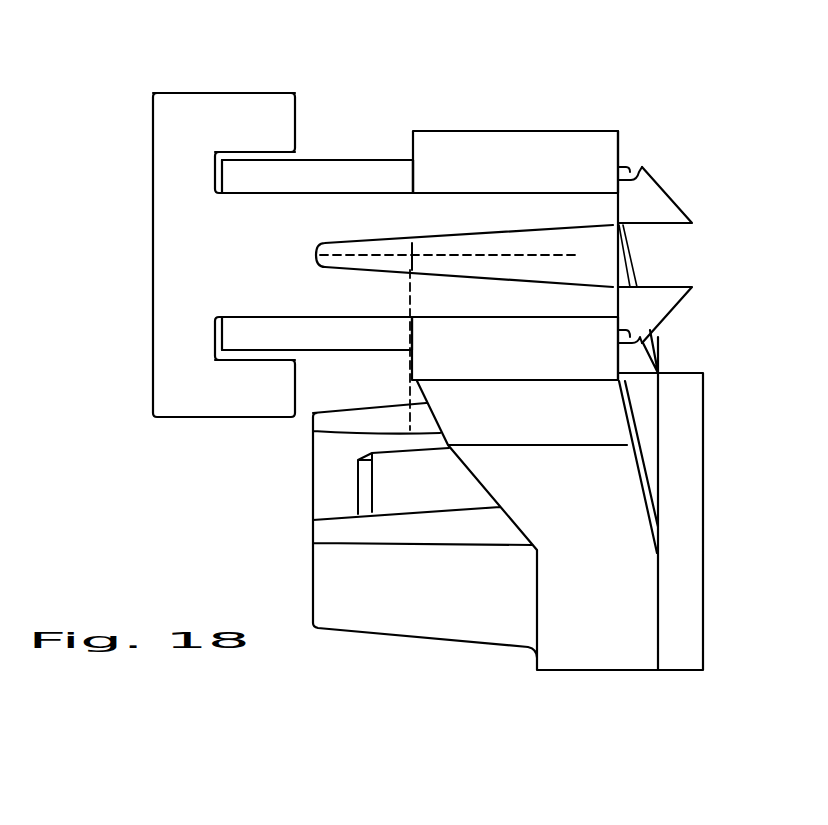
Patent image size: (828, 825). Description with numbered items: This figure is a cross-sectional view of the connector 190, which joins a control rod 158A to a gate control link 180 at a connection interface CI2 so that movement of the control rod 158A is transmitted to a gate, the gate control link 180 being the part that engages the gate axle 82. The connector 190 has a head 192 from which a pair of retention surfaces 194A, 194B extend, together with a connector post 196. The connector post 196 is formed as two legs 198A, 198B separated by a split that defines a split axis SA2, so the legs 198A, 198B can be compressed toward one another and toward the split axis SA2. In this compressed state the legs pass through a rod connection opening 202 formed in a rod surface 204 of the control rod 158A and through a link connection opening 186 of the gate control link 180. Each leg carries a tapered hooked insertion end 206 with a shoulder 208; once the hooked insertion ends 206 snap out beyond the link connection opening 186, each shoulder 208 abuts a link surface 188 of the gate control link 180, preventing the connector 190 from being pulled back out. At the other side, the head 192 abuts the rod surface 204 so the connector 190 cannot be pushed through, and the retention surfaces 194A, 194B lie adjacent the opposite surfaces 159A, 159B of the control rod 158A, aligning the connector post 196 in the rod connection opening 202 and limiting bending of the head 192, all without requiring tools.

The gate axle 82 is at (385, 497).
The control rod 158A is at (325, 345).
The opposite surface of the control rod 159A is at (307, 160).
The opposite surface of the control rod 159B is at (267, 353).
The gate control link 180 is at (495, 142).
The link connection opening 186 is at (627, 232).
The link surface 188 is at (638, 167).
The connector 190 is at (340, 156).
The head 192 is at (160, 242).
The retention surface 194A is at (247, 140).
The retention surface 194B is at (247, 360).
The connector post 196 is at (238, 200).
The leg 198A is at (515, 193).
The leg 198B is at (513, 380).
The rod connection opening 202 is at (373, 193).
The rod surface 204 is at (413, 168).
The hooked insertion end 206 is at (672, 192).
The shoulder 208 is at (617, 188).
The split axis SA2 is at (360, 253).
The connection interface CI2 is at (412, 333).